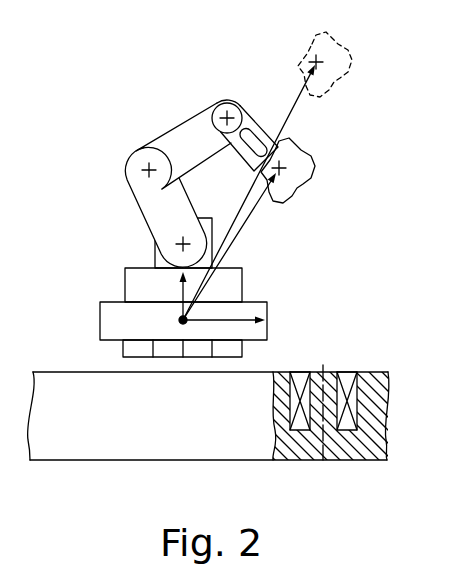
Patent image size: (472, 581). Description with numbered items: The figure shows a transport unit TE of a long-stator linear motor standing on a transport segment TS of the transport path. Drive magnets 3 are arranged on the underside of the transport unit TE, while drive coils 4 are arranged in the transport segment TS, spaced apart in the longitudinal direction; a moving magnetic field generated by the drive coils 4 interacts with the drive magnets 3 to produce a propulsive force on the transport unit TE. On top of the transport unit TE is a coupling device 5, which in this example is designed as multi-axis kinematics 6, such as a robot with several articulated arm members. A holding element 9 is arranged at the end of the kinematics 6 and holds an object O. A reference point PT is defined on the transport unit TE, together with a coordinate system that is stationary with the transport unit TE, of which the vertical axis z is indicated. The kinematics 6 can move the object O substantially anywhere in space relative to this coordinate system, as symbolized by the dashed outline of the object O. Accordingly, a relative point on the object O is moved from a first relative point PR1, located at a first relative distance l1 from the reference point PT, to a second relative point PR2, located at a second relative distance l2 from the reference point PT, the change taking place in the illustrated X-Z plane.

The drive magnets 3 is at (137, 348).
The drive coils 4 is at (350, 393).
The coupling device 5 is at (181, 147).
The kinematics 6 is at (201, 147).
The holding element 9 is at (229, 101).
The transport unit TE is at (122, 322).
The transport segment TS is at (92, 412).
The object O is at (293, 45).
The first relative point PR1 is at (283, 166).
The second relative point PR2 is at (320, 60).
The transport unit reference point PT is at (187, 318).
The z axis z is at (178, 286).
The first relative distance l1 is at (229, 246).
The second relative distance l2 is at (253, 192).